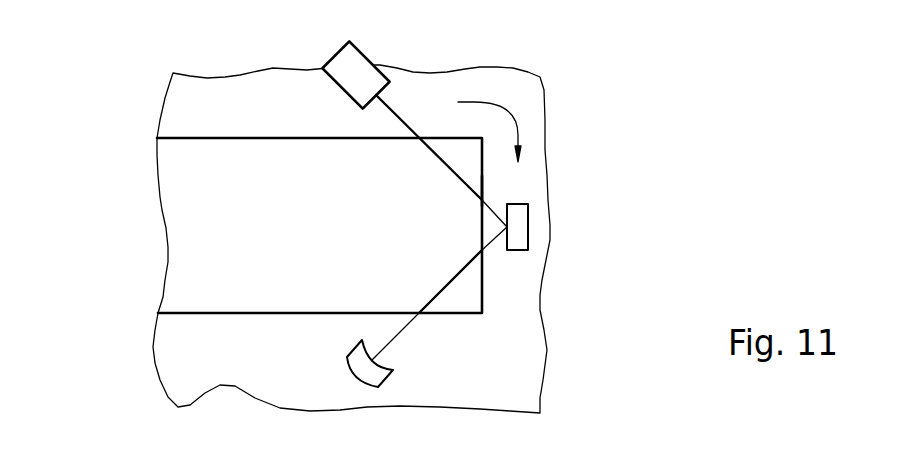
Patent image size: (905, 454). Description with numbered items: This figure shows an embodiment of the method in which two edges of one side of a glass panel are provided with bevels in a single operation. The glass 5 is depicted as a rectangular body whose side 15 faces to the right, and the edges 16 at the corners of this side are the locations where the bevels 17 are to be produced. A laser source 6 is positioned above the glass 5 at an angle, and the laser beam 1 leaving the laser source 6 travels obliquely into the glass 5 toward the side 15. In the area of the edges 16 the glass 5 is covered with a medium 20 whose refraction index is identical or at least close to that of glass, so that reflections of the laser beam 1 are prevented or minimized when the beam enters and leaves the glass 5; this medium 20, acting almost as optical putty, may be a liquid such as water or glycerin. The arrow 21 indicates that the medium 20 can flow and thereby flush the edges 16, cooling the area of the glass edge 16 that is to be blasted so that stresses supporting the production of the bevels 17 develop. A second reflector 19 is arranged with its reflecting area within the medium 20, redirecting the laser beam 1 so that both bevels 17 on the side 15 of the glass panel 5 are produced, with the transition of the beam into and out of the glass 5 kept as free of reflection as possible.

The laser beam 1 is at (400, 117).
The glass 5 is at (248, 168).
The laser source 6 is at (355, 75).
The side of the glass panel 15 is at (484, 183).
The edge 16 is at (482, 138).
The bevel 17 is at (440, 155).
The second reflector 19 is at (517, 237).
The medium 20 is at (505, 273).
The arrow 21 is at (518, 127).